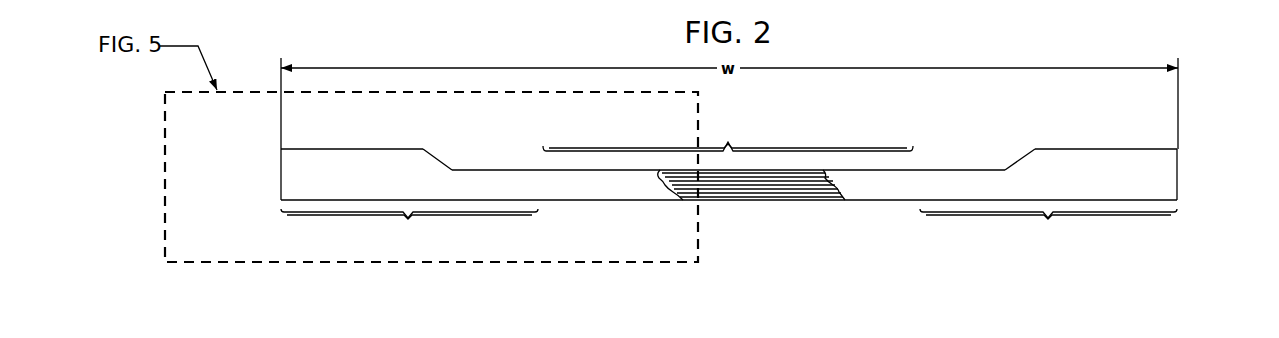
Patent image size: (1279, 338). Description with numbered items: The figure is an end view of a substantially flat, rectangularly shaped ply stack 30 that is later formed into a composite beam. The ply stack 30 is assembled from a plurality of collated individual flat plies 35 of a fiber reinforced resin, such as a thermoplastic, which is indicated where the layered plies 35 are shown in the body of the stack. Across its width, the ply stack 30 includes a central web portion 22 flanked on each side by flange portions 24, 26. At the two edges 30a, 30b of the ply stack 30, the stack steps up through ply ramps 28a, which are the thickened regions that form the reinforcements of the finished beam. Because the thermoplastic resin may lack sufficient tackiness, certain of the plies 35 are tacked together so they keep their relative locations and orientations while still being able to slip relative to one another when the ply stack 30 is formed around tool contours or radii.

The web portion 22 is at (728, 158).
The flange portion 24 is at (409, 199).
The flange portion 26 is at (1048, 225).
The ply ramp 28a is at (312, 147).
The flat ply stack 30 is at (997, 150).
The edge 30a is at (268, 163).
The edge 30b is at (1193, 163).
The ply 35 is at (763, 190).